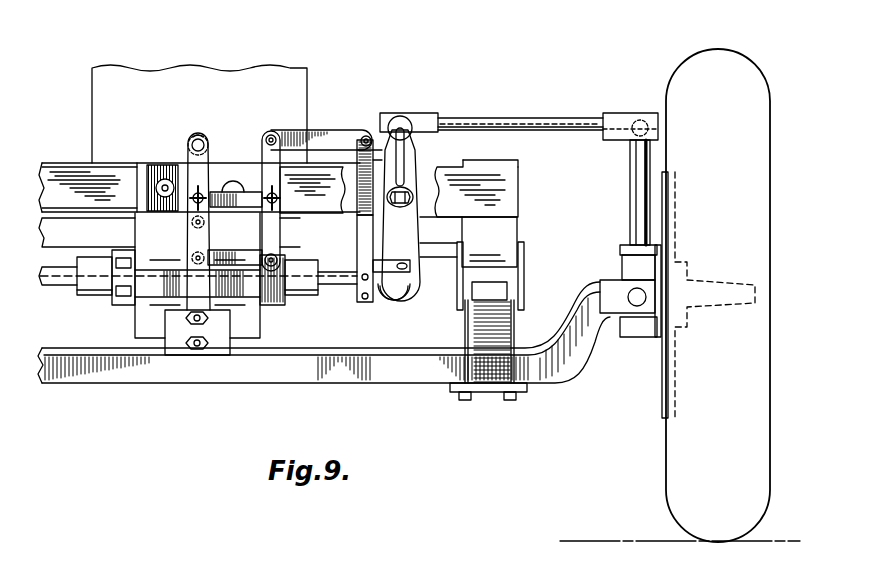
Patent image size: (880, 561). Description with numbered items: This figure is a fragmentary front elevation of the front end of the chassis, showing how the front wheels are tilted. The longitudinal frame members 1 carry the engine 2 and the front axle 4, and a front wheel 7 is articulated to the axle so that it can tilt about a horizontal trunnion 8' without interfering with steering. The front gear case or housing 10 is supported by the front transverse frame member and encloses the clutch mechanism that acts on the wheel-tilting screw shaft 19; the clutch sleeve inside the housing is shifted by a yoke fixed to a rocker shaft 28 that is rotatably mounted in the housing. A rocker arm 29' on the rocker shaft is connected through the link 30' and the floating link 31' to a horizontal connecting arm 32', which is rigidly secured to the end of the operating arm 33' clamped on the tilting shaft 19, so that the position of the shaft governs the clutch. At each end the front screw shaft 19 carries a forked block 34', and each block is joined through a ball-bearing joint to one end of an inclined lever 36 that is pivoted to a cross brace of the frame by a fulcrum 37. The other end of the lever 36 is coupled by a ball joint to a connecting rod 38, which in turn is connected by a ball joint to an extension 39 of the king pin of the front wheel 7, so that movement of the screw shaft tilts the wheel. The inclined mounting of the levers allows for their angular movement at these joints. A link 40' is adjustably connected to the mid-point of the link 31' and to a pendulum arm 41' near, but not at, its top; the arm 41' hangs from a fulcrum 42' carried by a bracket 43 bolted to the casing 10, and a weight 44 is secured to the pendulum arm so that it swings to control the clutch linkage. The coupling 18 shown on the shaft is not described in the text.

The longitudinal frame members 1 is at (510, 228).
The engine 2 is at (262, 72).
The front axle 4 is at (283, 366).
The front wheels 7 is at (667, 462).
The horizontal trunnion 8' is at (626, 302).
The front gear case or housing 10 is at (136, 321).
The shaft coupling 18 is at (80, 292).
The screw shaft 19 is at (62, 270).
The rocker shaft 28 is at (191, 223).
The rocker arm 29' is at (171, 248).
The link 30' is at (235, 245).
The link 31' is at (261, 187).
The horizontal connecting arm 32' is at (321, 122).
The operating arm 33' is at (342, 191).
The forked block 34' is at (383, 278).
The inclined lever 36 is at (405, 243).
The fulcrum 37 is at (405, 190).
The connecting rod 38 is at (505, 122).
The king pin extension 39 is at (631, 187).
The link 40' is at (236, 172).
The pendulum arm 41' is at (157, 176).
The fulcrum 42' is at (180, 116).
The bracket 43 is at (186, 165).
The weight 44 is at (178, 345).